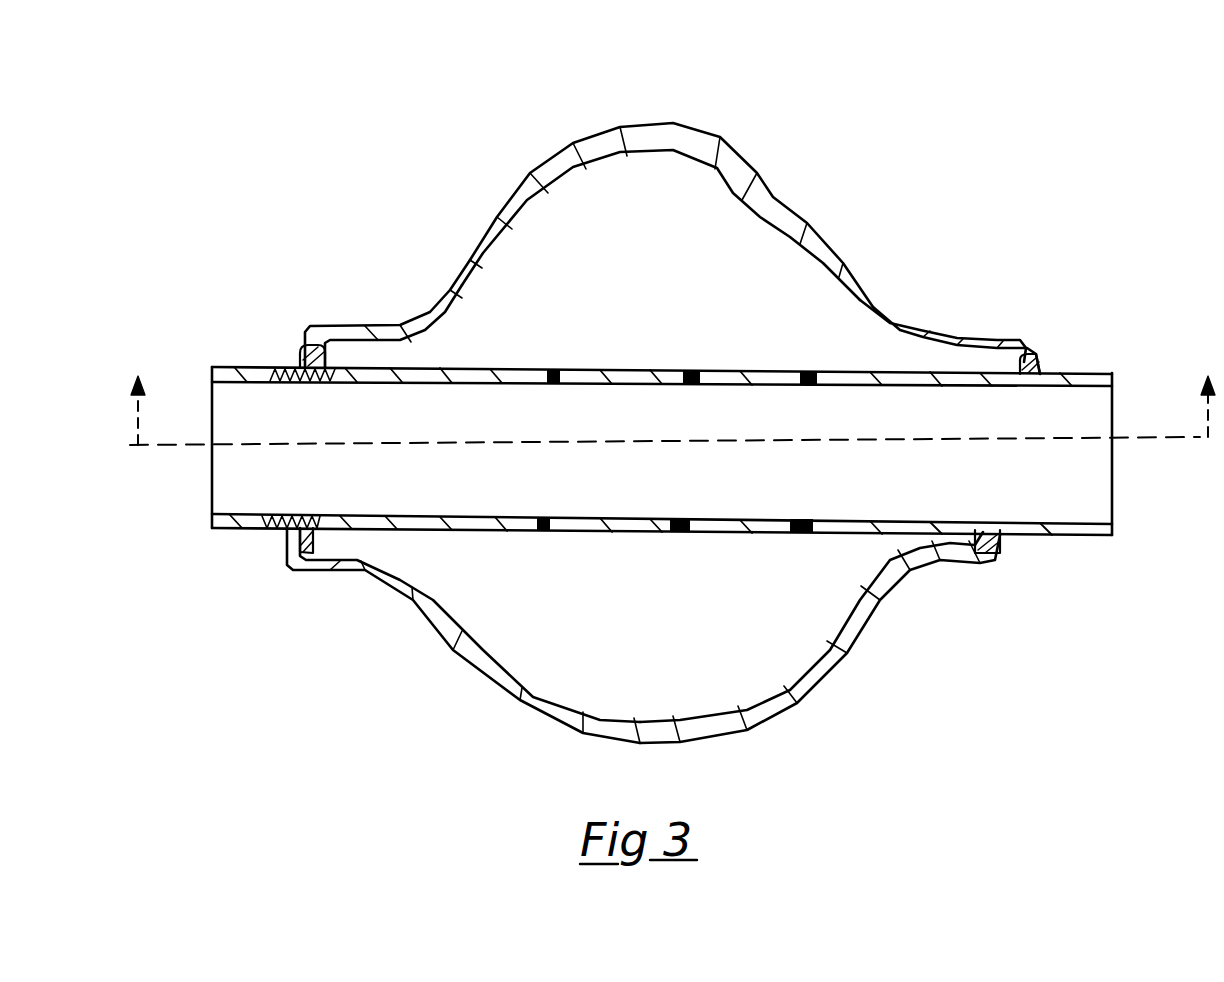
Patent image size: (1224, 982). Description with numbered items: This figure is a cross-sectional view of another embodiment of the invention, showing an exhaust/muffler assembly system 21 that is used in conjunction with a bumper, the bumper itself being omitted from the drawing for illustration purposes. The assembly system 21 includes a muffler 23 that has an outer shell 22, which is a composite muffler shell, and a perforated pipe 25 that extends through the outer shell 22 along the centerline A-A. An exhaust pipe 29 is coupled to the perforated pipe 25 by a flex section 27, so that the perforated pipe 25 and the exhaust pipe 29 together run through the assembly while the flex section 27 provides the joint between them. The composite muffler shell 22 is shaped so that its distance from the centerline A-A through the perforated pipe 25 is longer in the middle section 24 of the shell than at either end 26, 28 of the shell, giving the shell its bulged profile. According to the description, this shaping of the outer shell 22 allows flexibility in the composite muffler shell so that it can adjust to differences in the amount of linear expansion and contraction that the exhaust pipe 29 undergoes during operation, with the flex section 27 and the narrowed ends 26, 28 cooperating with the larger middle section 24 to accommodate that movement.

The exhaust/muffler assembly system 21 is at (327, 174).
The outer shell 22 is at (803, 697).
The muffler 23 is at (451, 652).
The middle section 24 is at (853, 282).
The perforated pipe 25 is at (867, 537).
The end 26 is at (1025, 340).
The flex section 27 is at (223, 603).
The end 28 is at (420, 305).
The exhaust pipe 29 is at (228, 366).